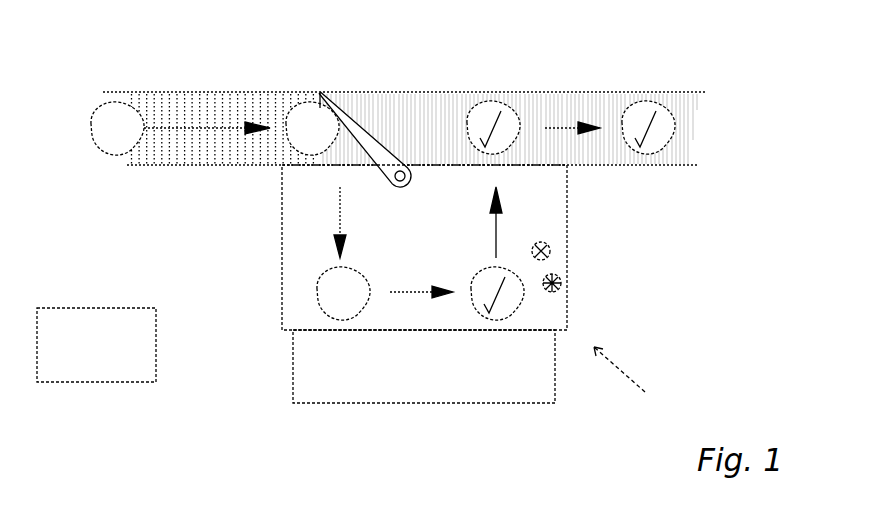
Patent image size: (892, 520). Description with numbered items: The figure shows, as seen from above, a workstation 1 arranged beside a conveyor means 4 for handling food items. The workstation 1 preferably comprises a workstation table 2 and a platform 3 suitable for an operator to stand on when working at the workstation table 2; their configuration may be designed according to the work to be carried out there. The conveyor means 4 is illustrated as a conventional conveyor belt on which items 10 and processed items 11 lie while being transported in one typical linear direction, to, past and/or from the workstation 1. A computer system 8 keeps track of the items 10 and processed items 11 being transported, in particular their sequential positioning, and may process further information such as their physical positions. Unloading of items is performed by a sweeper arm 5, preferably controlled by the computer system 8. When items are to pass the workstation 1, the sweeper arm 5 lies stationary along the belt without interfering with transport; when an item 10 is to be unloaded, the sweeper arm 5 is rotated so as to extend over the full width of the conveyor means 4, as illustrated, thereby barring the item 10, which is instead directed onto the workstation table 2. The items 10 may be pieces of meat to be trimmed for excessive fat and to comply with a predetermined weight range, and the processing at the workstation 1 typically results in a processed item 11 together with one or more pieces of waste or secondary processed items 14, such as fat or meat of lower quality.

The workstation 1 is at (629, 380).
The workstation table 2 is at (423, 312).
The platform 3 is at (375, 378).
The conveyor means 4 is at (565, 108).
The sweeper arm 5 is at (383, 102).
The computer system 8 is at (156, 352).
The item 10 is at (125, 128).
The processed item 11 is at (490, 108).
The secondary processed item 14 is at (552, 249).